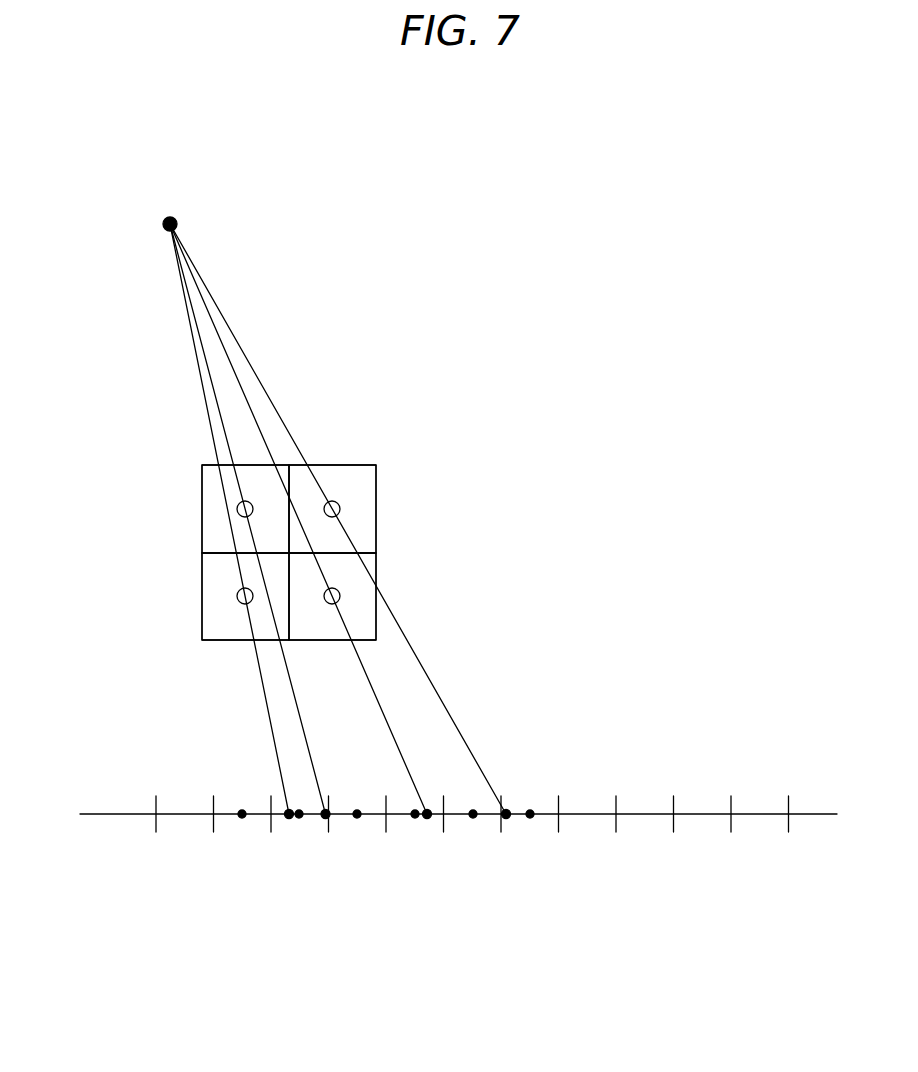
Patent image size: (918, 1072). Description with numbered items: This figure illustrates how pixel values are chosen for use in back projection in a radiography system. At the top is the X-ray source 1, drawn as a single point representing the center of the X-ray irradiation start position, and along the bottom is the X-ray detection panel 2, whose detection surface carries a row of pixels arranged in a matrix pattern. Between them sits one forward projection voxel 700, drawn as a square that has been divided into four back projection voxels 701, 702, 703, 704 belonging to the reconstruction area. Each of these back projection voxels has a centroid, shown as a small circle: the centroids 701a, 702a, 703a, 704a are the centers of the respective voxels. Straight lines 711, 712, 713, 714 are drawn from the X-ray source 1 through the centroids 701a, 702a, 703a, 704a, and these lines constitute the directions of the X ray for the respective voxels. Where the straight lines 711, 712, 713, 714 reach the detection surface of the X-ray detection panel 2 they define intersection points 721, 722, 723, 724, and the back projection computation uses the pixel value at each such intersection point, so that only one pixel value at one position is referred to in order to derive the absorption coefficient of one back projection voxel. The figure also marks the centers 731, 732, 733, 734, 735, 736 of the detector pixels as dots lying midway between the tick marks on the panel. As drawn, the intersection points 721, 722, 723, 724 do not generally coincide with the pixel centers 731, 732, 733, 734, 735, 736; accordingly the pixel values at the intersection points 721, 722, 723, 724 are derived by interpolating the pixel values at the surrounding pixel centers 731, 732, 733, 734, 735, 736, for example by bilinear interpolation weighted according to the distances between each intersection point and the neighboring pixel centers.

The X-ray source 1 is at (170, 216).
The X-ray detection panel 2 is at (828, 813).
The forward projection voxel 700 is at (184, 465).
The back projection voxel 701 is at (217, 543).
The back projection voxel 702 is at (357, 478).
The back projection voxel 703 is at (217, 628).
The back projection voxel 704 is at (354, 569).
The centroid of back projection voxel 701a is at (237, 509).
The centroid of back projection voxel 702a is at (340, 509).
The centroid of back projection voxel 703a is at (237, 596).
The centroid of back projection voxel 704a is at (340, 596).
The straight line 711 is at (292, 685).
The straight line 712 is at (437, 690).
The straight line 713 is at (263, 702).
The straight line 714 is at (390, 730).
The intersection point 721 is at (325, 818).
The intersection point 722 is at (507, 818).
The intersection point 723 is at (289, 818).
The intersection point 724 is at (428, 818).
The pixel center 731 is at (242, 810).
The pixel center 732 is at (299, 818).
The pixel center 733 is at (357, 810).
The pixel center 734 is at (415, 818).
The pixel center 735 is at (473, 810).
The pixel center 736 is at (530, 810).